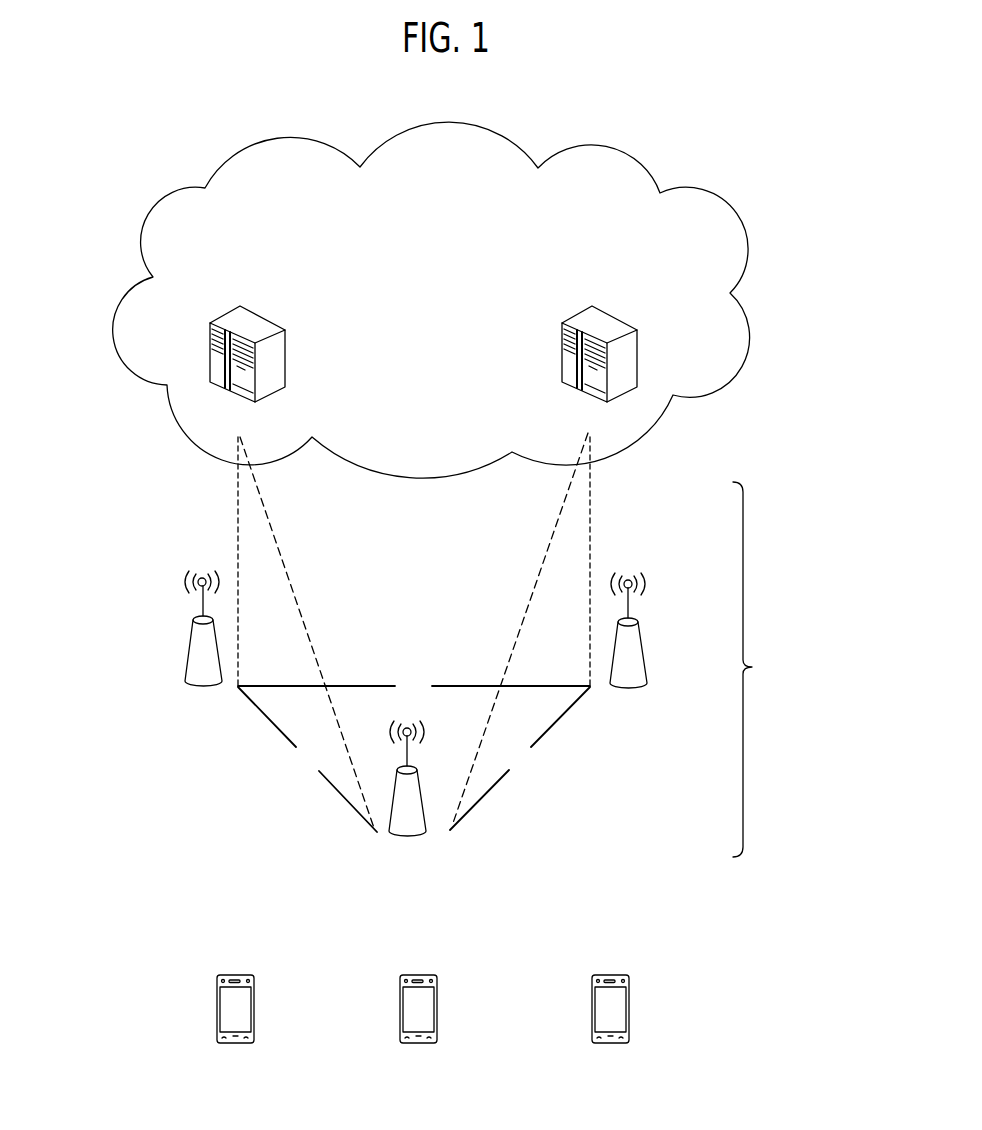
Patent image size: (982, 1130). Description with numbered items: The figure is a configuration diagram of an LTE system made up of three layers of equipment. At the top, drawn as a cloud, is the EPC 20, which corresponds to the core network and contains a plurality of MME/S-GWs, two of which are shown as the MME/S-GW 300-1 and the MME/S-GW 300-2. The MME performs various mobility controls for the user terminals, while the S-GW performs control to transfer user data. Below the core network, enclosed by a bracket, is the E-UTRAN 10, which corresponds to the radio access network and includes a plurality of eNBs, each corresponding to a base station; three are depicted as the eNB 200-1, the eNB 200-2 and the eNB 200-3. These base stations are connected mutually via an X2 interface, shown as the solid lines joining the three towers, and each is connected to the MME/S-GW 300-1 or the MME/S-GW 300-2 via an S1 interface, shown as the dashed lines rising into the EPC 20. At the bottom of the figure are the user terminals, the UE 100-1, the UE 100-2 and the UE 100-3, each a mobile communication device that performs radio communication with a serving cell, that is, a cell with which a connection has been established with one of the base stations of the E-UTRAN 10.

The EPC 20 is at (640, 160).
The E-UTRAN 10 is at (542, 645).
The MME/S-GW 300-1 is at (270, 313).
The MME/S-GW 300-2 is at (627, 298).
The eNB 200-1 is at (187, 655).
The eNB 200-2 is at (425, 812).
The eNB 200-3 is at (640, 630).
The UE 100-1 is at (250, 973).
The UE 100-2 is at (422, 973).
The UE 100-3 is at (614, 973).